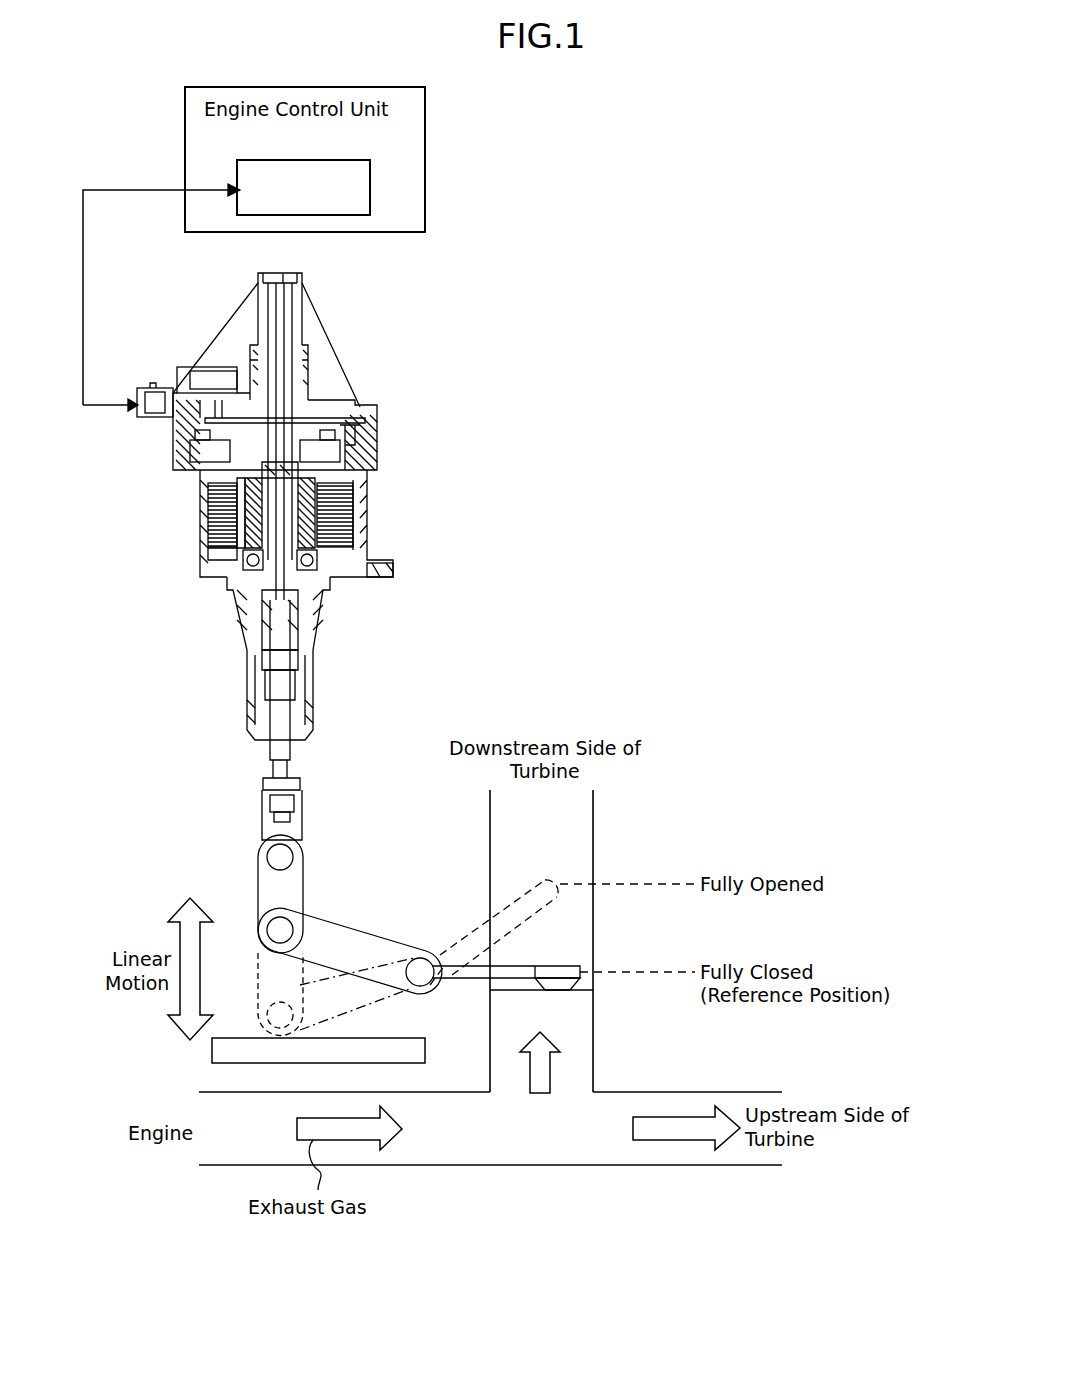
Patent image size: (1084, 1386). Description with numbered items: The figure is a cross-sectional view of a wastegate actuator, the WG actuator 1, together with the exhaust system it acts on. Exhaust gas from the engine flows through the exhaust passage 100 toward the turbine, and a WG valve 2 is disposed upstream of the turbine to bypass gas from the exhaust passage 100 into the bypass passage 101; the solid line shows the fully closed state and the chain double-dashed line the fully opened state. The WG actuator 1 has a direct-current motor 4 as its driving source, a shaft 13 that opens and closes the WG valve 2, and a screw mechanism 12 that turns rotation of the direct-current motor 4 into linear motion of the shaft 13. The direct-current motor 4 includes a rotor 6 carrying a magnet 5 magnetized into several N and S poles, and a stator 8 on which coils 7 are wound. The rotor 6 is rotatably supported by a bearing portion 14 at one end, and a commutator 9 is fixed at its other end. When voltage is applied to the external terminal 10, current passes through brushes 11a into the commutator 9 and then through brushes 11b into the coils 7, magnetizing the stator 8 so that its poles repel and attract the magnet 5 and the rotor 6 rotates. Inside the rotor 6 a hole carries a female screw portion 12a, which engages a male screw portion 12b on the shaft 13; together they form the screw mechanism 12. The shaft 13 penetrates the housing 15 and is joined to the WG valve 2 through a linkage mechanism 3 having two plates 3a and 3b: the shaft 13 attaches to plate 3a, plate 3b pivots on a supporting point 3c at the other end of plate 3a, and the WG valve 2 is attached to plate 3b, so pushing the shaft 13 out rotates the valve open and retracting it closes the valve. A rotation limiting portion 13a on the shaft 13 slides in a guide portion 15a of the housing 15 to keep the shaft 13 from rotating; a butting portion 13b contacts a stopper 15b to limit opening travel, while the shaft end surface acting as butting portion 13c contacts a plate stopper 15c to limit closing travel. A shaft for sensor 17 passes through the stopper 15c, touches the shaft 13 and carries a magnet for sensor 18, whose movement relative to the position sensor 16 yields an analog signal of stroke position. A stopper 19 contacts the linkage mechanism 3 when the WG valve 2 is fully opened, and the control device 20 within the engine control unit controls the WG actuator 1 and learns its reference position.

The WG actuator 1 is at (326, 329).
The WG valve 2 is at (568, 968).
The linkage mechanism 3 is at (358, 919).
The plate 3a is at (292, 878).
The plate 3b is at (345, 945).
The supporting point 3c is at (270, 930).
The direct-current motor 4 is at (330, 380).
The magnet 5 is at (340, 535).
The rotor 6 is at (350, 505).
The coils 7 is at (190, 478).
The stator 8 is at (207, 500).
The commutator 9 is at (360, 455).
The external terminal 10 is at (172, 395).
The brushes 11a is at (175, 445).
The brushes 11b is at (365, 435).
The screw mechanism 12 is at (230, 519).
The female screw portion 12a is at (232, 535).
The male screw portion 12b is at (240, 555).
The shaft 13 is at (285, 748).
The rotation limiting portion 13a is at (248, 597).
The butting portion 13b is at (258, 650).
The butting portion 13c is at (303, 475).
The bearing portion 14 is at (235, 570).
The housing 15 is at (312, 612).
The guide portion 15a is at (298, 645).
The stopper 15b is at (250, 690).
The stopper 15c is at (300, 415).
The position sensor 16 is at (268, 340).
The shaft for sensor 17 is at (288, 385).
The magnet for sensor 18 is at (285, 320).
The stopper 19 is at (215, 1055).
The control device 20 is at (350, 161).
The exhaust passage 100 is at (600, 1165).
The bypass passage 101 is at (593, 835).